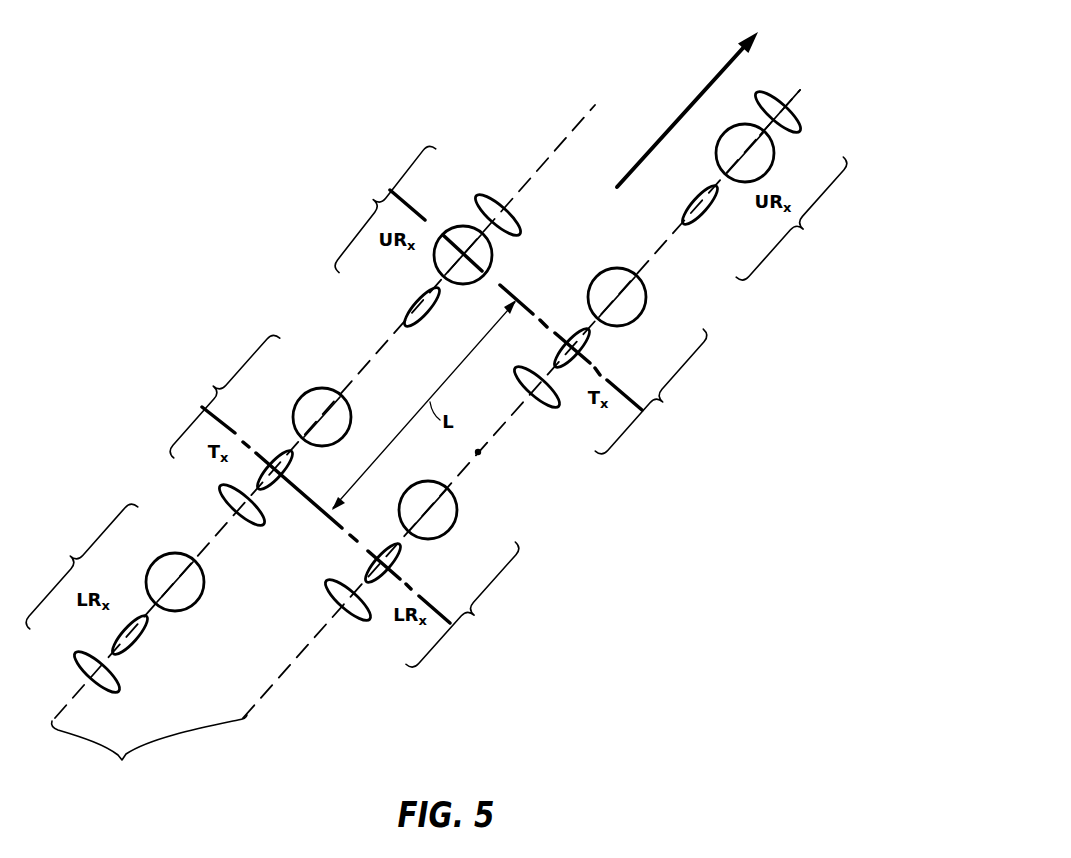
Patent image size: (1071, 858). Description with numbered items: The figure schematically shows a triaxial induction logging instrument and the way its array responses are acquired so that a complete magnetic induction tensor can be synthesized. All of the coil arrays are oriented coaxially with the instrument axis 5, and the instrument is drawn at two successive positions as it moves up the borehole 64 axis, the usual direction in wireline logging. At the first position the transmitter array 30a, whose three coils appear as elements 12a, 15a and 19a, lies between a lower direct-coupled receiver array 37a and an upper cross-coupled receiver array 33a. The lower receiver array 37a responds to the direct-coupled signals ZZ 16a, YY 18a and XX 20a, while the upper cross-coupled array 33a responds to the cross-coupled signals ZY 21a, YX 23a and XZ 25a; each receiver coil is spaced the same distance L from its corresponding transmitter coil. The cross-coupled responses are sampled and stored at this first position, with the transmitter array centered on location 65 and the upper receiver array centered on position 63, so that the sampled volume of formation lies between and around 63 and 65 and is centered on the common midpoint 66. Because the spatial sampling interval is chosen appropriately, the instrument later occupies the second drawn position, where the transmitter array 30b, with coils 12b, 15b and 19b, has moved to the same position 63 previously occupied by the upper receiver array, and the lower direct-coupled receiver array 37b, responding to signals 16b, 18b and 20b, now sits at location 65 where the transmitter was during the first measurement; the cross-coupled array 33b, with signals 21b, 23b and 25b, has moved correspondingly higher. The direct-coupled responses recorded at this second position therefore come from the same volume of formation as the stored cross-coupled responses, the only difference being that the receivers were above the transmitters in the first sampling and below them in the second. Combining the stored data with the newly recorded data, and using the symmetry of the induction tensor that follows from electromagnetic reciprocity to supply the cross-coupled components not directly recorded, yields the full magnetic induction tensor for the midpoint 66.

The instrument axis 5 is at (149, 746).
The transmitter element 12a is at (283, 452).
The transmitter element 12b is at (593, 345).
The transmitter lens 15a is at (218, 499).
The transmitter lens 15b is at (548, 408).
The ZZ direct-coupled signal 16a is at (108, 690).
The ZZ direct-coupled signal 16b is at (355, 620).
The YY direct-coupled signal 18a is at (143, 641).
The YY direct-coupled signal 18b is at (405, 561).
The transmitter ball lens 19a is at (303, 393).
The transmitter ball lens 19b is at (643, 315).
The XX direct-coupled signal 20a is at (182, 611).
The XX direct-coupled signal 20b is at (452, 534).
The ZY cross-coupled signal 21a is at (410, 300).
The ZY cross-coupled signal 21b is at (704, 216).
The YX cross-coupled signal 23a is at (477, 228).
The YX cross-coupled signal 23b is at (773, 168).
The XZ cross-coupled signal 25a is at (478, 197).
The XZ cross-coupled signal 25b is at (796, 134).
The transmitter array 30a is at (220, 392).
The transmitter array 30b is at (655, 396).
The cross-coupled receiver array 33a is at (380, 205).
The cross-coupled receiver array 33b is at (796, 223).
The direct-coupled receiver array 37a is at (76, 562).
The direct-coupled receiver array 37b is at (467, 609).
The position 63 is at (620, 385).
The borehole axis 64 is at (662, 135).
The location 65 is at (428, 596).
The midpoint 66 is at (368, 358).